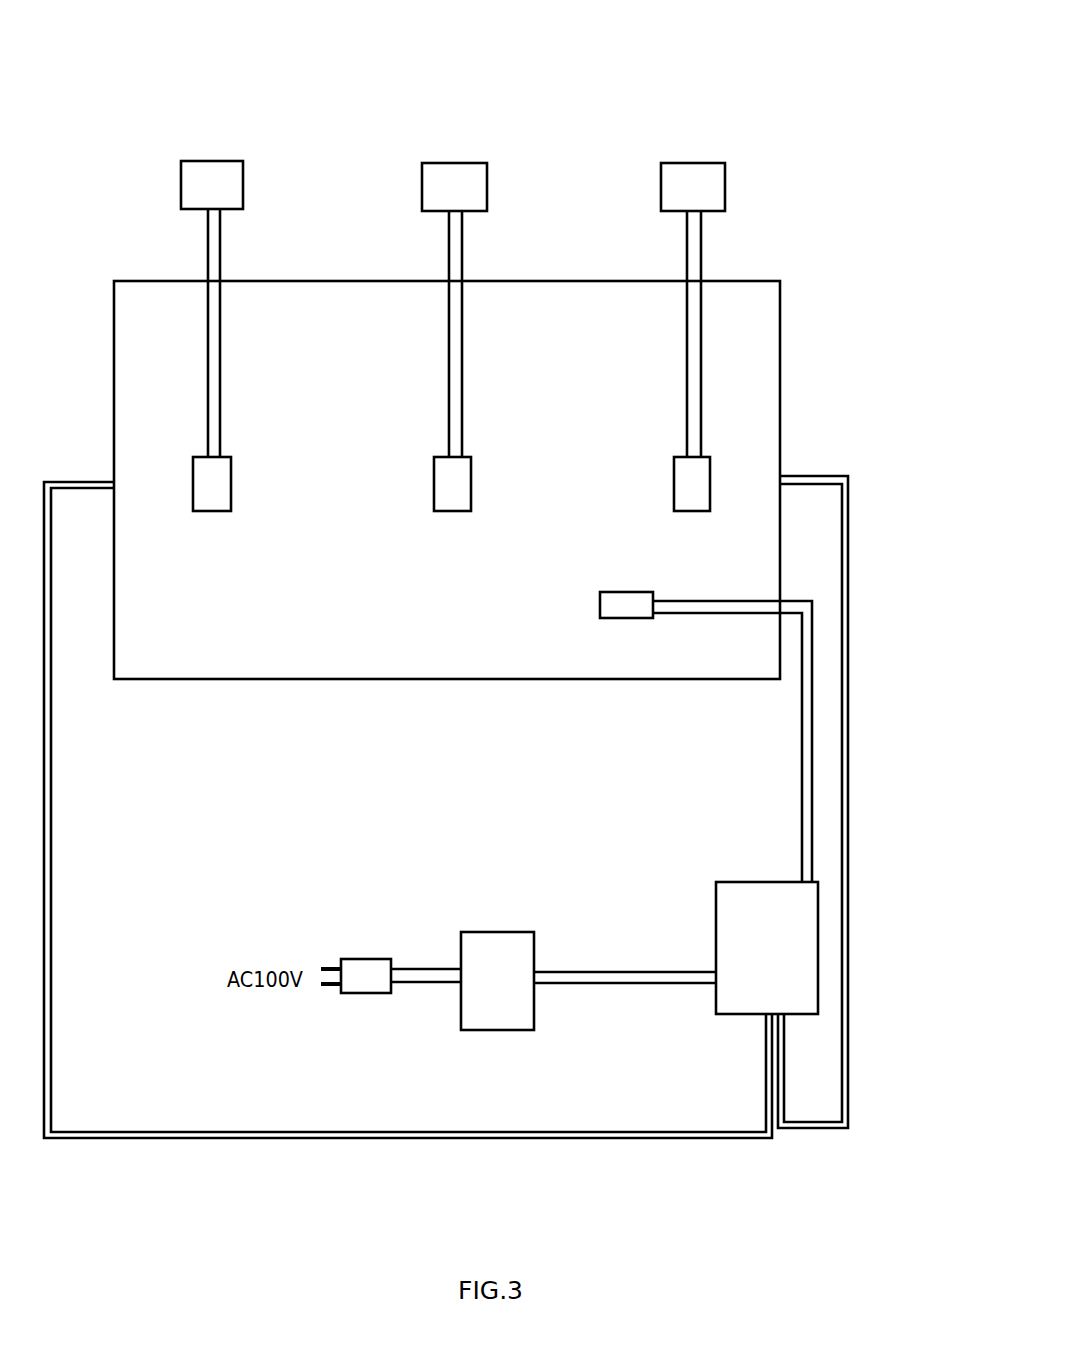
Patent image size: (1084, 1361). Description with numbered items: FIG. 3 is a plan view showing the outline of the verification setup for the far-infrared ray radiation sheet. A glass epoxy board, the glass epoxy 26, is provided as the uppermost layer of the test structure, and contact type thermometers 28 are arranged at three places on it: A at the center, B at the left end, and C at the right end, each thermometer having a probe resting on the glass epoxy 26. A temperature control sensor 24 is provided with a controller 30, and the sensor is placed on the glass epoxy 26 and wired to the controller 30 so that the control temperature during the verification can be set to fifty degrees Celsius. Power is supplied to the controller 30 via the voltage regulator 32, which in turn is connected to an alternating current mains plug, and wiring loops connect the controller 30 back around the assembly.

The temperature control sensor 24 is at (612, 612).
The glass epoxy 26 is at (748, 302).
The contact type thermometers 28 is at (670, 174).
The controller 30 is at (731, 938).
The voltage regulator 32 is at (500, 1002).